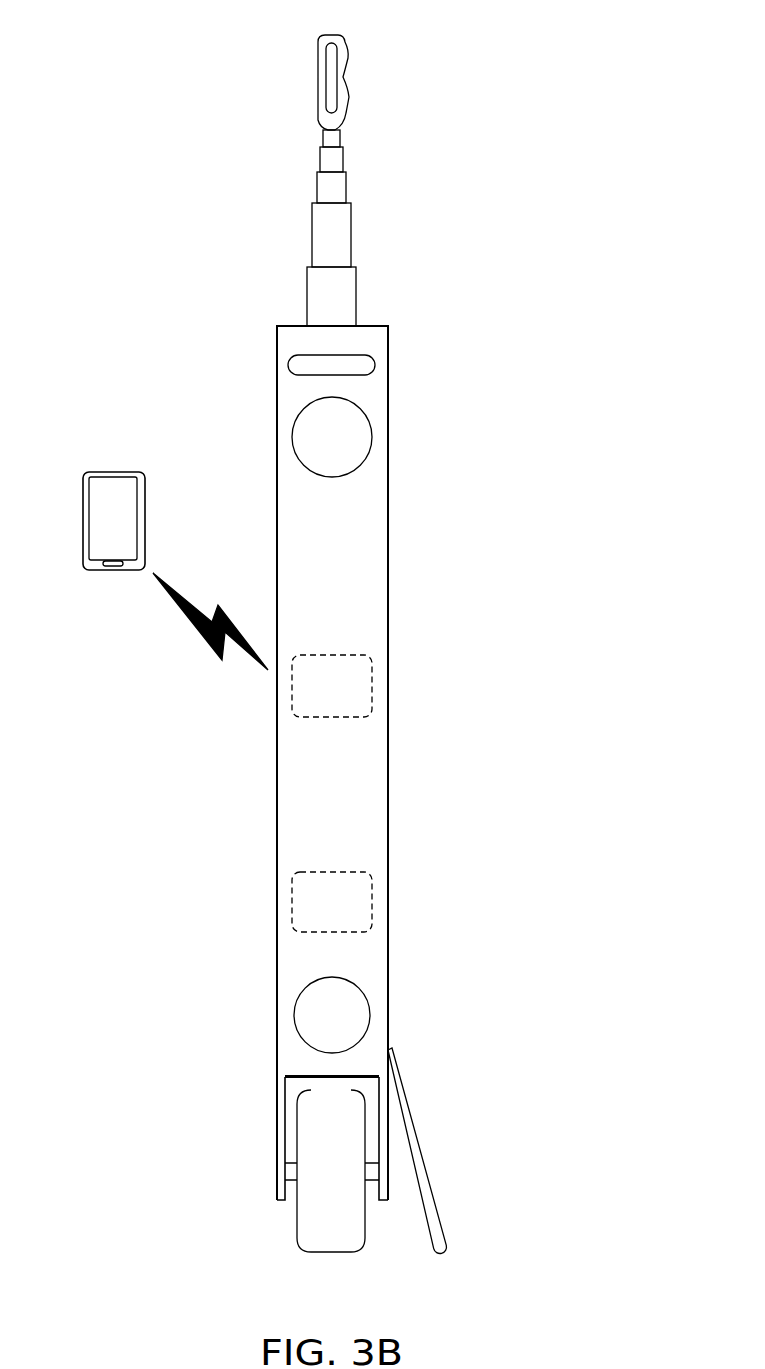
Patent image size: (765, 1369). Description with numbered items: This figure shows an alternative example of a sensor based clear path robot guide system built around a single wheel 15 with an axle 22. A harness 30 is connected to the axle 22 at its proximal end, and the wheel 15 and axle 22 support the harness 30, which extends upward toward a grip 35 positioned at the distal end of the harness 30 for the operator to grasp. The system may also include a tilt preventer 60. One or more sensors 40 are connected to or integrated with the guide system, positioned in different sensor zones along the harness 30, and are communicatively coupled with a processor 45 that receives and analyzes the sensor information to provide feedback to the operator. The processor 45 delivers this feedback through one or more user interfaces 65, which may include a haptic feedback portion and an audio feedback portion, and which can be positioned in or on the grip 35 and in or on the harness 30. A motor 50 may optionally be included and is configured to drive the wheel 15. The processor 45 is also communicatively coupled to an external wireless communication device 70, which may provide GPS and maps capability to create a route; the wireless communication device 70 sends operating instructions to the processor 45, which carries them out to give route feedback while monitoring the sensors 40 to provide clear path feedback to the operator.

The wheel 15 is at (317, 1135).
The axle 22 is at (292, 1167).
The harness 30 is at (365, 508).
The grip 35 is at (350, 114).
The sensors 40 is at (318, 448).
The processor 45 is at (318, 698).
The motor 50 is at (318, 913).
The tilt preventer 60 is at (412, 1137).
The user interface 65 is at (332, 63).
The wireless communication device 70 is at (99, 515).